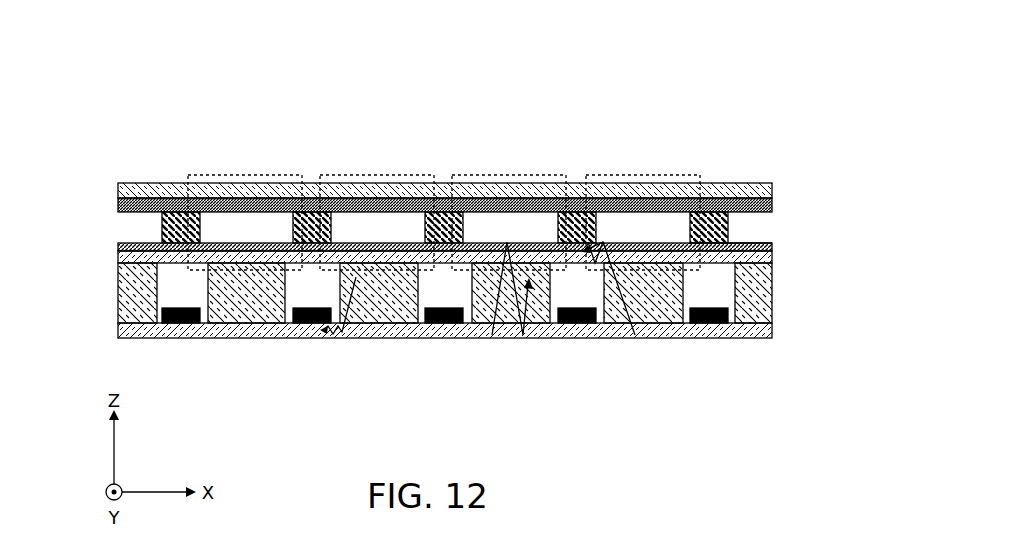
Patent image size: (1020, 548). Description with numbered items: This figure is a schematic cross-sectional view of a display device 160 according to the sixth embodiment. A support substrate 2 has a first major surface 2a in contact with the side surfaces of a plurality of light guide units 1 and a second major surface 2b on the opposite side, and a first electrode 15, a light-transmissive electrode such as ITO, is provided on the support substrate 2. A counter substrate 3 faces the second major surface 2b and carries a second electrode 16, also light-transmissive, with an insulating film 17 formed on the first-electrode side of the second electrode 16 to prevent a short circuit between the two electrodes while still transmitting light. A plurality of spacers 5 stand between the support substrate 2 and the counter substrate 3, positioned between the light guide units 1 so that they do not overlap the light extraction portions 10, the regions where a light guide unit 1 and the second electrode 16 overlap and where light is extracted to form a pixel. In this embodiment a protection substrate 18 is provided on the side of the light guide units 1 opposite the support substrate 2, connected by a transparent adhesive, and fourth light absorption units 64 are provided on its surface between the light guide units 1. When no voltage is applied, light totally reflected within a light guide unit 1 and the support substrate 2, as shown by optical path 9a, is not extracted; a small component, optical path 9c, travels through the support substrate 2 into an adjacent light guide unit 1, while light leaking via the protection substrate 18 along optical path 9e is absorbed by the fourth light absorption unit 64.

The display device 160 is at (676, 86).
The counter substrate 3 is at (147, 190).
The second electrode 16 is at (120, 199).
The insulating film 17 is at (120, 209).
The spacer 5 is at (176, 218).
The light extraction portion 10 is at (243, 175).
The first electrode 15 is at (120, 247).
The support substrate 2 is at (120, 256).
The first major surface 2a is at (750, 305).
The second major surface 2b is at (752, 243).
The light guide unit 1 is at (245, 308).
The protection substrate 18 is at (125, 330).
The fourth light absorption unit 64 is at (181, 318).
The optical path 9e is at (344, 332).
The optical path 9a is at (526, 302).
The optical path 9c is at (610, 302).